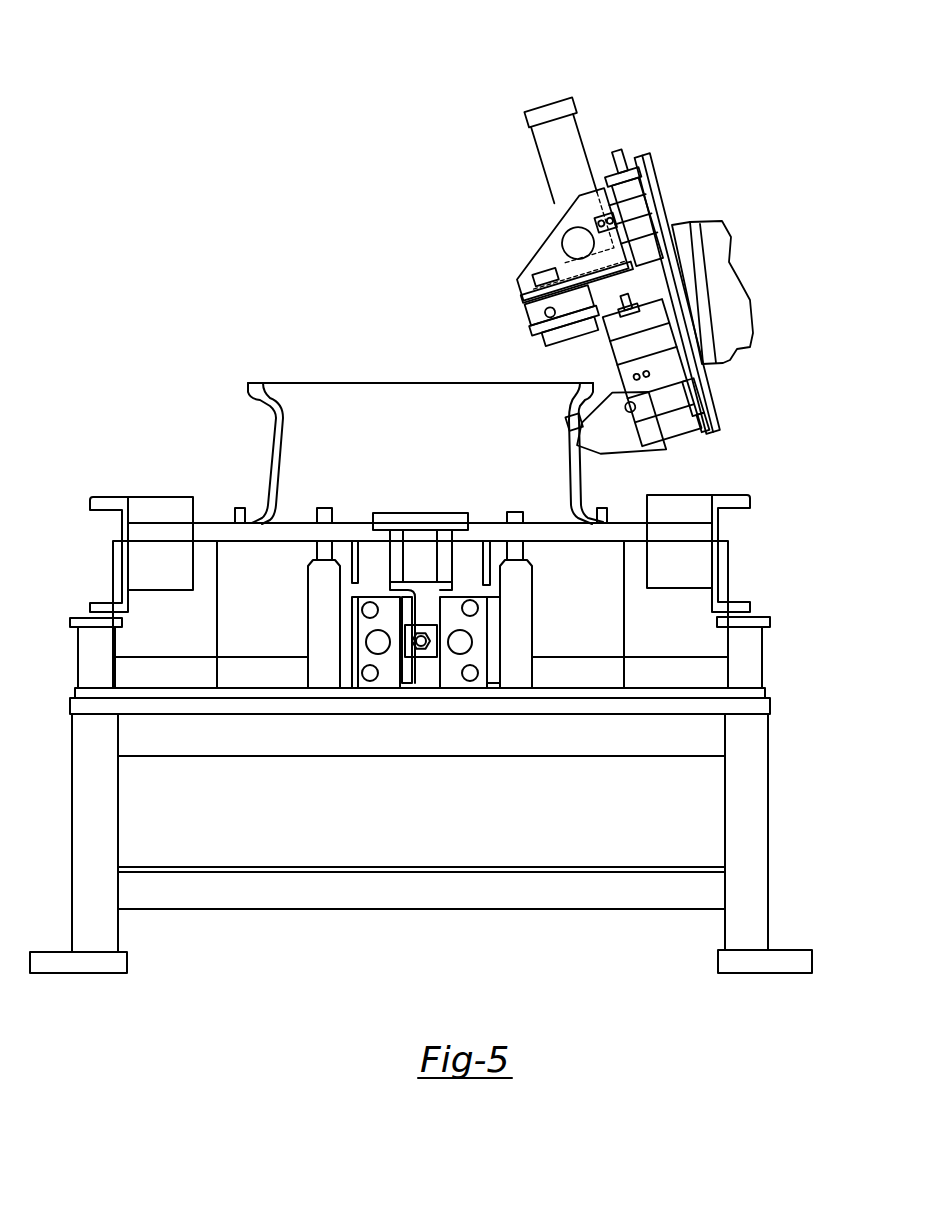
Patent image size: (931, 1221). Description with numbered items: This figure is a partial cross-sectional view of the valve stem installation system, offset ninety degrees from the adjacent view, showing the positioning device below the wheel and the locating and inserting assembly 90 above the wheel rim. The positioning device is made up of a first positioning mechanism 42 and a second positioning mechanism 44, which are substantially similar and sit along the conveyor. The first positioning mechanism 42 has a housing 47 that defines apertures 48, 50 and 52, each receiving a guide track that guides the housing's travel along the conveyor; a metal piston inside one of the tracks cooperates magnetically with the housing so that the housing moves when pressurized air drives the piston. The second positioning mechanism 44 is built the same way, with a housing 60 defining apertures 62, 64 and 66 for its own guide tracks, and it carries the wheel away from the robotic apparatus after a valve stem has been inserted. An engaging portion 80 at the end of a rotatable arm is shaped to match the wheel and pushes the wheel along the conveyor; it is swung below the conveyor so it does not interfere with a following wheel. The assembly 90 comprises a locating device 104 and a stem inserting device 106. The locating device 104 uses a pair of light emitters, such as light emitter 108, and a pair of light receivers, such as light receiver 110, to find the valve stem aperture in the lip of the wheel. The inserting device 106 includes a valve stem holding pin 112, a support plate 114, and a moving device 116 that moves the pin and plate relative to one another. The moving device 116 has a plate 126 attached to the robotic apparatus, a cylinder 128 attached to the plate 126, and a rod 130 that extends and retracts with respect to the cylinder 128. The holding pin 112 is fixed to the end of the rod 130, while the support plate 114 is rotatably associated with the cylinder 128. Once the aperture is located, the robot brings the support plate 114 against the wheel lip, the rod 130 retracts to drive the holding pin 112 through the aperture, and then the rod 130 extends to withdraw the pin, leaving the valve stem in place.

The first positioning mechanism 42 is at (387, 702).
The second positioning mechanism 44 is at (480, 715).
The housing 47 is at (358, 684).
The aperture 48 is at (362, 668).
The aperture 50 is at (372, 600).
The aperture 52 is at (365, 635).
The housing 60 is at (450, 680).
The aperture 62 is at (481, 673).
The aperture 64 is at (480, 606).
The aperture 66 is at (473, 641).
The engaging portion 80 is at (398, 513).
The assembly 90 is at (703, 204).
The locating device 104 is at (512, 330).
The stem inserting device 106 is at (549, 267).
The light emitter 108 is at (530, 271).
The light receiver 110 is at (577, 445).
The valve stem holding pin 112 is at (583, 427).
The support plate 114 is at (514, 360).
The moving device 116 is at (526, 76).
The plate 126 is at (652, 200).
The cylinder 128 is at (575, 138).
The rod 130 is at (607, 405).